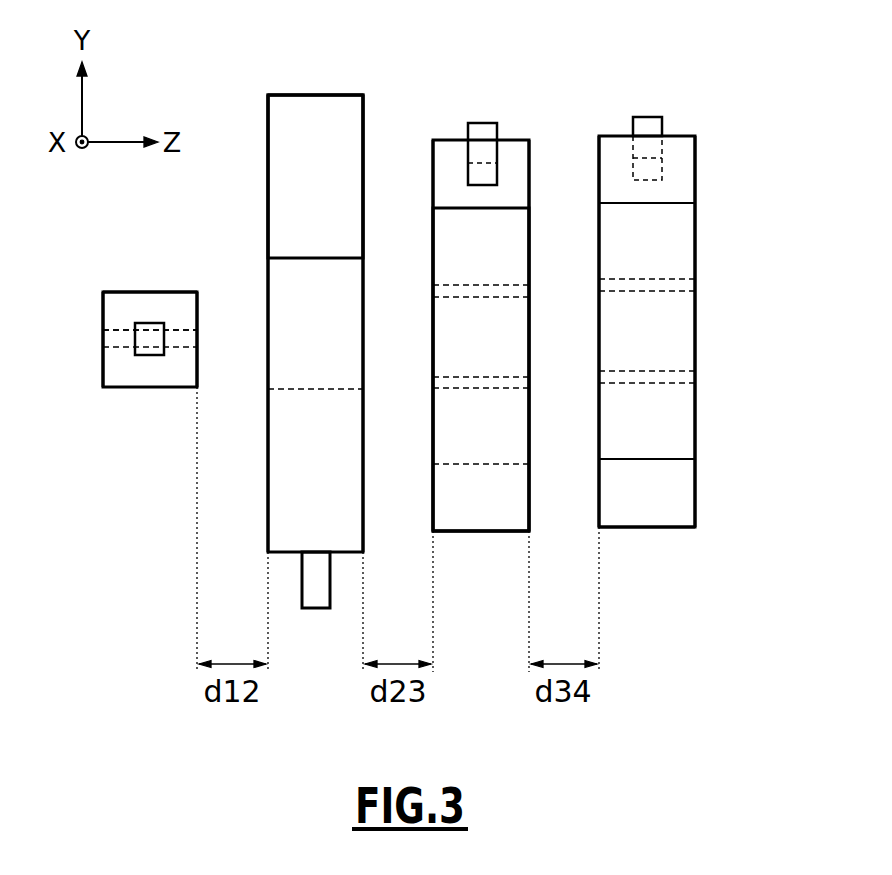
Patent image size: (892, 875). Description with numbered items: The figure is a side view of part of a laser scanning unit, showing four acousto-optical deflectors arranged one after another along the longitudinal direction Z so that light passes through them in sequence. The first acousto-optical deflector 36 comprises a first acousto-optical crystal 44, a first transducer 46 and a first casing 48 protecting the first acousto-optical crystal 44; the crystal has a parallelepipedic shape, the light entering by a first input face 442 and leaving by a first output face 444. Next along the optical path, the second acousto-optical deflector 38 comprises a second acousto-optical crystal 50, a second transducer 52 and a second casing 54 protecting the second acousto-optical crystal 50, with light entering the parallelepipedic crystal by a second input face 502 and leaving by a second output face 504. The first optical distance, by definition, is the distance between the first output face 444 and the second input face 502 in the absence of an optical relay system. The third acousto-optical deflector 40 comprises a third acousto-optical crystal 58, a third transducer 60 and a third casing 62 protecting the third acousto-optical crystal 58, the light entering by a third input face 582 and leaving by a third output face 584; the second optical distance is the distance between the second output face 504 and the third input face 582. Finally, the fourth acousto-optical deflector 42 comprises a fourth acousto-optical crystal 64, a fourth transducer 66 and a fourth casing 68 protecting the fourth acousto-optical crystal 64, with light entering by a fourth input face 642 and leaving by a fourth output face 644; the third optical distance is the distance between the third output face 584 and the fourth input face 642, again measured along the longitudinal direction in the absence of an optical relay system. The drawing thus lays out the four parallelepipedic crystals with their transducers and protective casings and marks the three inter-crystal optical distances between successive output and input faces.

The first acousto-optical deflector 36 is at (132, 300).
The second acousto-optical deflector 38 is at (330, 175).
The third acousto-optical deflector 40 is at (510, 148).
The fourth acousto-optical deflector 42 is at (678, 145).
The first acousto-optical crystal 44 is at (174, 340).
The first transducer 46 is at (152, 343).
The first casing 48 is at (108, 303).
The second acousto-optical crystal 50 is at (335, 327).
The second transducer 52 is at (316, 598).
The second casing 54 is at (302, 108).
The third acousto-optical crystal 58 is at (497, 340).
The third transducer 60 is at (483, 128).
The third casing 62 is at (473, 532).
The fourth acousto-optical crystal 64 is at (672, 306).
The fourth transducer 66 is at (646, 125).
The fourth casing 68 is at (648, 527).
The first input face 442 is at (103, 340).
The first output face 444 is at (197, 340).
The second input face 502 is at (268, 370).
The second output face 504 is at (366, 286).
The third input face 582 is at (432, 347).
The third output face 584 is at (532, 322).
The fourth input face 642 is at (599, 340).
The fourth output face 644 is at (695, 346).